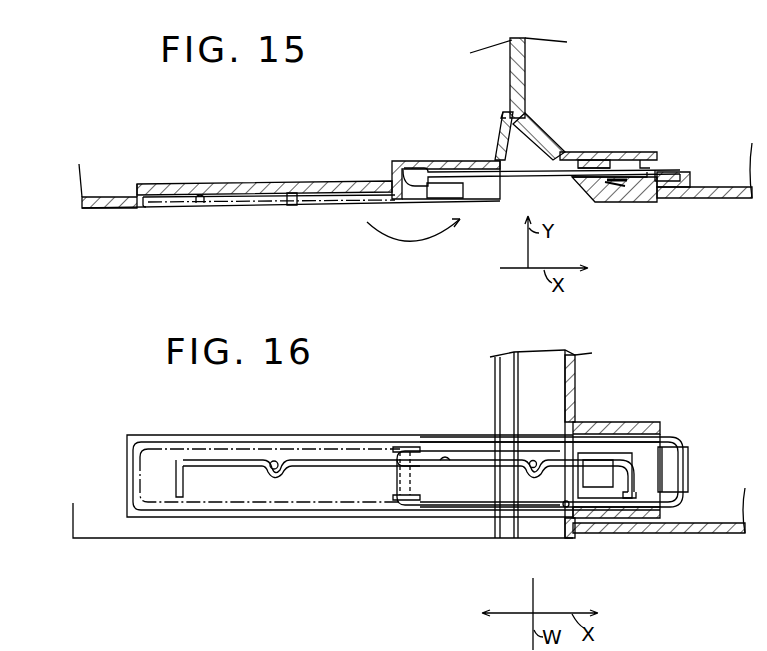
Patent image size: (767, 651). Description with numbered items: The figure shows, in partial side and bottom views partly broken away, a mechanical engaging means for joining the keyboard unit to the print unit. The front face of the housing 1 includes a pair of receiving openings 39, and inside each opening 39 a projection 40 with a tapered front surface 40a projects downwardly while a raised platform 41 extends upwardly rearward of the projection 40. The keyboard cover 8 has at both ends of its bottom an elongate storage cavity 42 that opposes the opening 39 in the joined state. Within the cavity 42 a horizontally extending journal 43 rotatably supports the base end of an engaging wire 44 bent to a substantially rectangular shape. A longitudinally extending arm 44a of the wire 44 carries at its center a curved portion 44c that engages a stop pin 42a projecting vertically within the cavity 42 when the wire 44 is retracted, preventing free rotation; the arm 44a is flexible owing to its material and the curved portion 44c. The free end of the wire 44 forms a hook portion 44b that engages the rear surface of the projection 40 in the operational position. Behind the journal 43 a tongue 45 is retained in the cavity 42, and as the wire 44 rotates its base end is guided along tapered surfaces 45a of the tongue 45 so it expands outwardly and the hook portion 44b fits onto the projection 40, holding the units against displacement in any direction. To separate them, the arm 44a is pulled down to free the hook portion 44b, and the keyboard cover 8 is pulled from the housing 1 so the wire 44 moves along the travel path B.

In FIG. 15, the housing 1 is at (665, 200).
In FIG. 16, the housing 1 is at (711, 534).
In FIG. 15, the keyboard cover 8 is at (122, 204).
In FIG. 16, the keyboard cover 8 is at (284, 533).
In FIG. 15, the receiving opening 39 is at (590, 190).
In FIG. 16, the receiving opening 39 is at (563, 508).
In FIG. 15, the projection 40 is at (632, 185).
In FIG. 16, the projection 40 is at (632, 524).
In FIG. 15, the tapered front surface 40a is at (605, 160).
In FIG. 16, the tapered front surface 40a is at (613, 488).
In FIG. 15, the raised platform 41 is at (688, 176).
In FIG. 16, the raised platform 41 is at (689, 472).
In FIG. 15, the storage cavity 42 is at (349, 205).
In FIG. 16, the storage cavity 42 is at (315, 518).
In FIG. 15, the stop pin 42a is at (296, 205).
In FIG. 16, the stop pin 42a is at (276, 460).
In FIG. 15, the journal 43 is at (430, 199).
In FIG. 16, the journal 43 is at (402, 446).
In FIG. 15, the engaging wire 44 is at (258, 206).
In FIG. 16, the engaging wire 44 is at (216, 519).
In FIG. 16, the arm 44a is at (252, 472).
In FIG. 15, the hook portion 44b is at (203, 203).
In FIG. 16, the hook portion 44b is at (175, 485).
In FIG. 16, the curved portion 44c is at (285, 471).
In FIG. 15, the tongue 45 is at (483, 194).
In FIG. 16, the tongue 45 is at (488, 522).
In FIG. 16, the tapered surface 45a is at (446, 468).
In FIG. 15, the travel path B is at (622, 200).